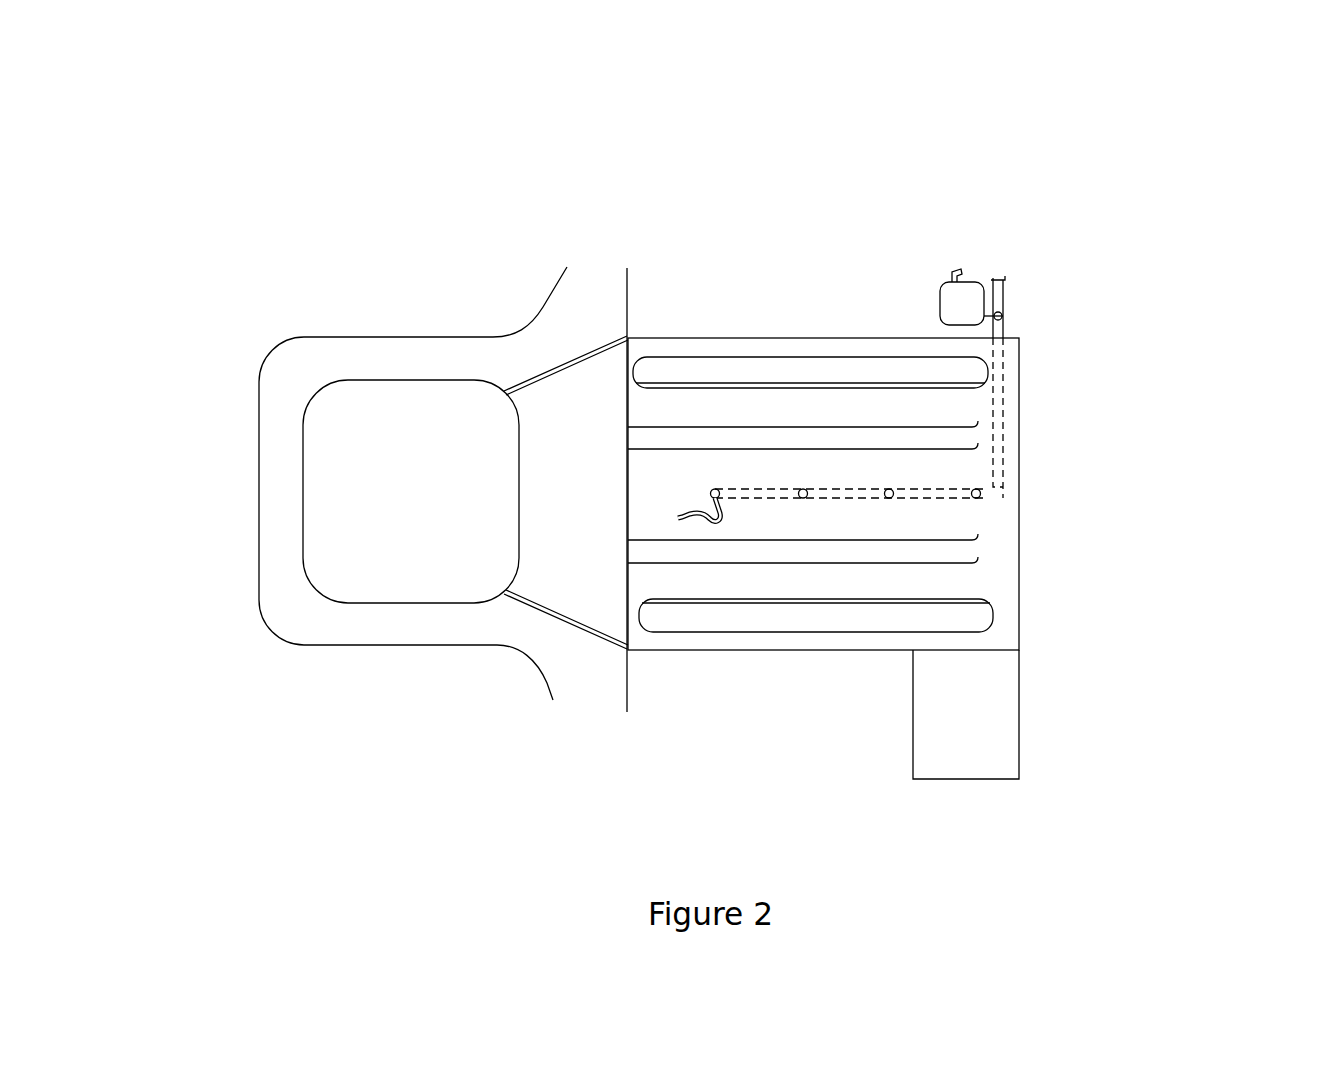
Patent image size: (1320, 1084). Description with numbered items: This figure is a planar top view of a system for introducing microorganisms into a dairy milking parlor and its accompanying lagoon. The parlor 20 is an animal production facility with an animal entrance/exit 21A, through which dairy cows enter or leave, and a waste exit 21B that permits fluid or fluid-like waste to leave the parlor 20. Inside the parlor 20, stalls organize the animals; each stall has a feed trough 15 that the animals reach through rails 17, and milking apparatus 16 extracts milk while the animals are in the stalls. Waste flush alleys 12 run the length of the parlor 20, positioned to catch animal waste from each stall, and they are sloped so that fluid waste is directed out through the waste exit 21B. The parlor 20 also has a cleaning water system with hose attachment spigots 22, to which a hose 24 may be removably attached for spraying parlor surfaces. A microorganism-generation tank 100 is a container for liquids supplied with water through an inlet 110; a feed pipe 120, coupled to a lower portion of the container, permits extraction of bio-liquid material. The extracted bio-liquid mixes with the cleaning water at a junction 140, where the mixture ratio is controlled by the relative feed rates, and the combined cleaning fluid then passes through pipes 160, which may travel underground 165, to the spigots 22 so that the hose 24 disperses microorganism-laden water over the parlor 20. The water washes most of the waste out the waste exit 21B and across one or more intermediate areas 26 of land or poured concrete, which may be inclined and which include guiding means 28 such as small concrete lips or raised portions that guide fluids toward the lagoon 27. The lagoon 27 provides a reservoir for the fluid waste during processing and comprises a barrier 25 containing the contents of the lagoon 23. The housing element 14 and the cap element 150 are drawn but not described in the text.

The waste flush alleys 12 is at (755, 438).
The housing 14 is at (978, 475).
The feed troughs 15 is at (893, 370).
The milking apparatus 16 is at (997, 723).
The rails 17 is at (835, 383).
The parlor 20 is at (1118, 633).
The animal entrance/exit 21A is at (1058, 520).
The waste exit 21B is at (602, 483).
The hose attachment spigots 22 is at (1019, 487).
The contents of the lagoon 23 is at (403, 593).
The hose 24 is at (704, 500).
The barrier 25 is at (325, 620).
The intermediate areas 26 is at (597, 613).
The lagoon 27 is at (307, 737).
The guiding means 28 is at (620, 650).
The microorganism-generation tank 100 is at (947, 312).
The inlet 110 is at (957, 273).
The feed pipe 120 is at (992, 277).
The junction 140 is at (1003, 297).
The line cap 150 is at (1003, 280).
The pipes 160 is at (1003, 316).
The underground pipes 165 is at (1003, 409).